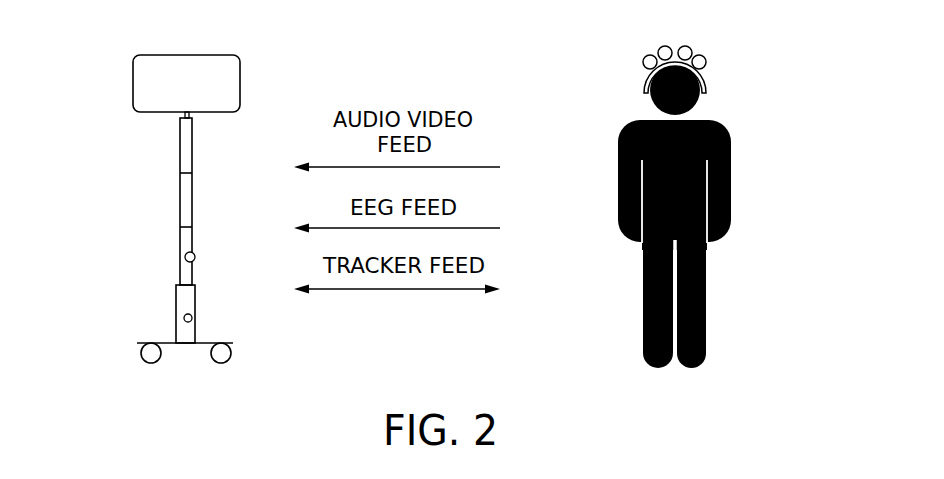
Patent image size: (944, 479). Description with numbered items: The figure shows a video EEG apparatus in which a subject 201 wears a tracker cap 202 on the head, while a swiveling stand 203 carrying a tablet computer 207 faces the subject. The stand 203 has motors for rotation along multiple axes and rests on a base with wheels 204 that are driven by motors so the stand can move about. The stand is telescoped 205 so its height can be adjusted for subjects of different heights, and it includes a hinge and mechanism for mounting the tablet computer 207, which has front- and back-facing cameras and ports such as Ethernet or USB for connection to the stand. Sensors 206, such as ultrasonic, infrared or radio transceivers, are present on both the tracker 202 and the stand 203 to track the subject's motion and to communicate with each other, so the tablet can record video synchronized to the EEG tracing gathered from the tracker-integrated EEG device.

The subject 201 is at (731, 187).
The tracker cap 202 is at (706, 73).
The swiveling stand 203 is at (179, 214).
The wheels 204 is at (140, 350).
The telescoped portion of stand 205 is at (175, 285).
The sensors 206 is at (195, 259).
The tablet computer 207 is at (133, 88).